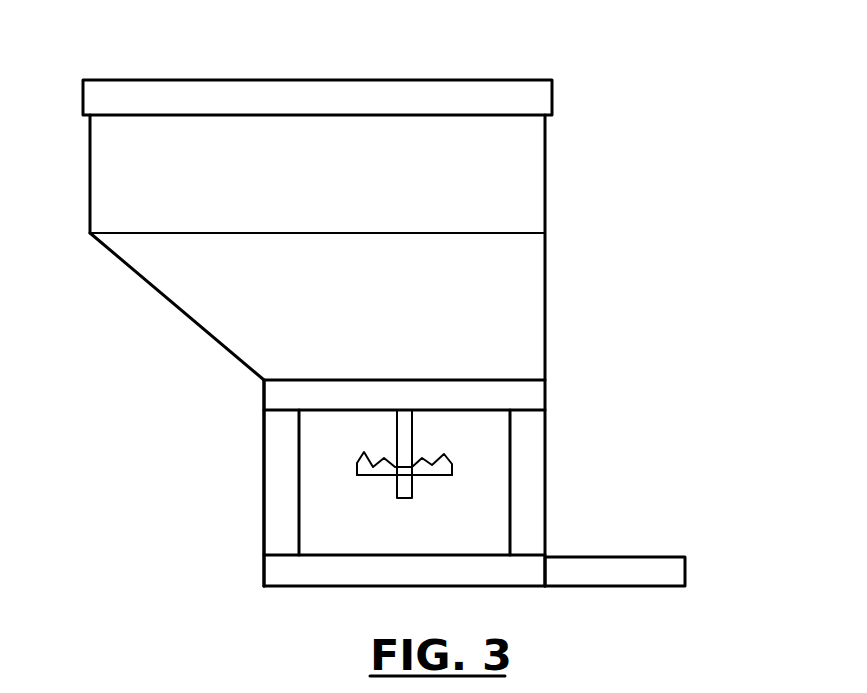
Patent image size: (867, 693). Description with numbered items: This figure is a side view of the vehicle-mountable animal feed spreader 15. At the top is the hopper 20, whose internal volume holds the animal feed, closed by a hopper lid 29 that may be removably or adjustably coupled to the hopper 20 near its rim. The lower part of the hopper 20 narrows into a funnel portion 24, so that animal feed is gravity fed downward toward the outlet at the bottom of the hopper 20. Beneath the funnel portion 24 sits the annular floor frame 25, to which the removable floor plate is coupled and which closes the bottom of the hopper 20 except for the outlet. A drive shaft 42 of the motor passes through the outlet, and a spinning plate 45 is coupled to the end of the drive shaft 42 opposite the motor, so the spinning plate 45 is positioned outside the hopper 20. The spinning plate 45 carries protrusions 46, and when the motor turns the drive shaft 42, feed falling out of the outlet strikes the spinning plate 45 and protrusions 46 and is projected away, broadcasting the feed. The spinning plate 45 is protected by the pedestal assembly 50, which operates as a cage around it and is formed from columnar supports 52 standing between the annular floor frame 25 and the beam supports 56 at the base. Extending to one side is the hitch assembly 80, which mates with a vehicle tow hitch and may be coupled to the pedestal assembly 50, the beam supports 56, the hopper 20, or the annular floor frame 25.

The vehicle-mountable spreader 15 is at (605, 143).
The hopper 20 is at (517, 202).
The funnel portion 24 is at (168, 306).
The annular floor frame 25 is at (270, 393).
The hopper lid 29 is at (100, 88).
The drive shaft 42 is at (410, 431).
The spinning plate 45 is at (430, 472).
The protrusions 46 is at (428, 472).
The pedestal assembly 50 is at (240, 472).
The columnar supports 52 is at (273, 517).
The beam supports 56 is at (378, 570).
The hitch assembly 80 is at (648, 567).